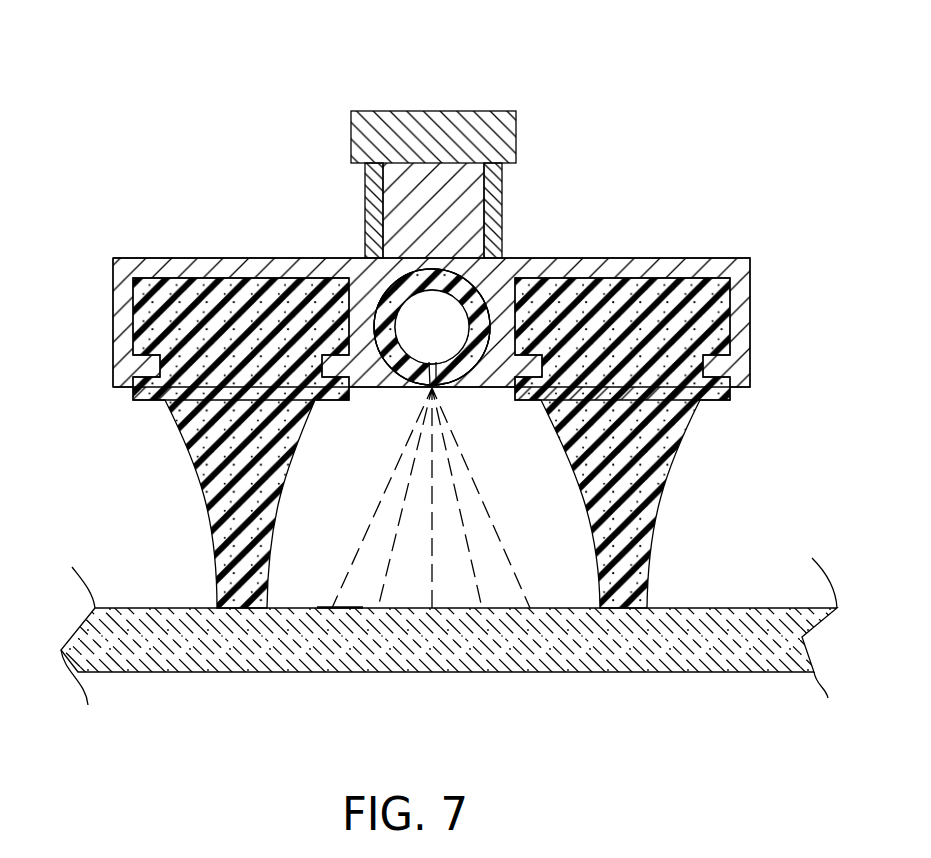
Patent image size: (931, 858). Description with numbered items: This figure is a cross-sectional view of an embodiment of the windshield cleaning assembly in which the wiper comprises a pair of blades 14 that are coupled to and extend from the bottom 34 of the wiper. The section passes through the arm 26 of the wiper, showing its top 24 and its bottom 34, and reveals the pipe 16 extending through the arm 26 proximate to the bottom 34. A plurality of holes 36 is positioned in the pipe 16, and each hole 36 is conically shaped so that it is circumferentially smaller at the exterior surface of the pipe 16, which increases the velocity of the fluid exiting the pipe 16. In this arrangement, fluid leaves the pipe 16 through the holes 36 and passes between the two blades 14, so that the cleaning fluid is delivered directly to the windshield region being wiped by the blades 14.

The blade 14 is at (257, 527).
The pipe 16 is at (477, 287).
The top 24 is at (390, 112).
The arm 26 is at (473, 120).
The bottom 34 is at (367, 388).
The hole 36 is at (432, 360).